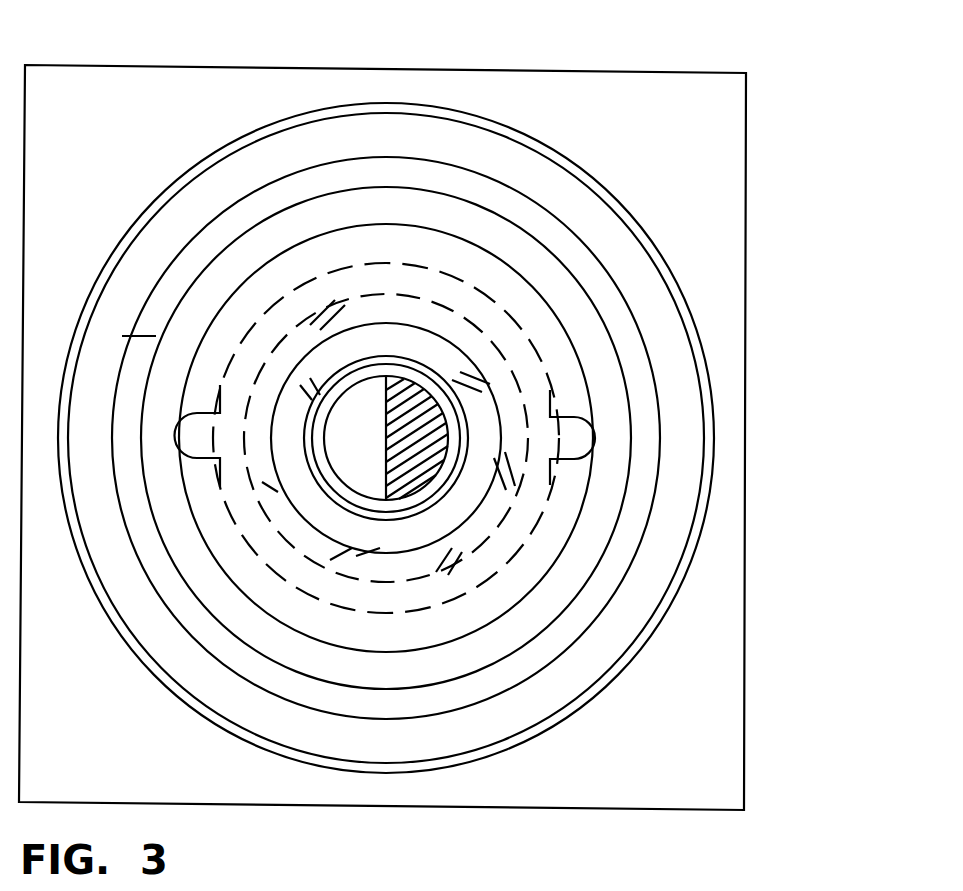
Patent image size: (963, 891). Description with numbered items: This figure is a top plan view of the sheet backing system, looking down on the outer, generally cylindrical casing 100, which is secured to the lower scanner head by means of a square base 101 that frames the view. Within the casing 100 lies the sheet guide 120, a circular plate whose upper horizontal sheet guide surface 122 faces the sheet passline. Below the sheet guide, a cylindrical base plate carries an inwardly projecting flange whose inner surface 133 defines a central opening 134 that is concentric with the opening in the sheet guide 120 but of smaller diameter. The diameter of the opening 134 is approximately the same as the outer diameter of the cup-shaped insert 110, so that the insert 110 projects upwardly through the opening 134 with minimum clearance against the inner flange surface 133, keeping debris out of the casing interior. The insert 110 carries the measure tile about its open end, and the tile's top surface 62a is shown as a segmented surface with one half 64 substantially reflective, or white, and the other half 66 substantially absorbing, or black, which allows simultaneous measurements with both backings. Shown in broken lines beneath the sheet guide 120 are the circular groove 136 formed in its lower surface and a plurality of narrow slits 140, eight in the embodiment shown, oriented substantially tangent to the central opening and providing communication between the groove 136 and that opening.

The square base 101 is at (608, 73).
The outer cylindrical casing 100 is at (640, 290).
The sheet guide 120 is at (600, 492).
The upper horizontal sheet guide surface 122 is at (523, 558).
The circular groove 136 is at (330, 287).
The slits 140 is at (108, 324).
The top surface of tile 62a is at (347, 412).
The cup-shaped insert 110 is at (455, 446).
The inner surface of flange 133 is at (581, 493).
The central opening 134 is at (450, 483).
The reflective half of measure tile 64 is at (386, 438).
The absorbing half of measure tile 66 is at (425, 407).